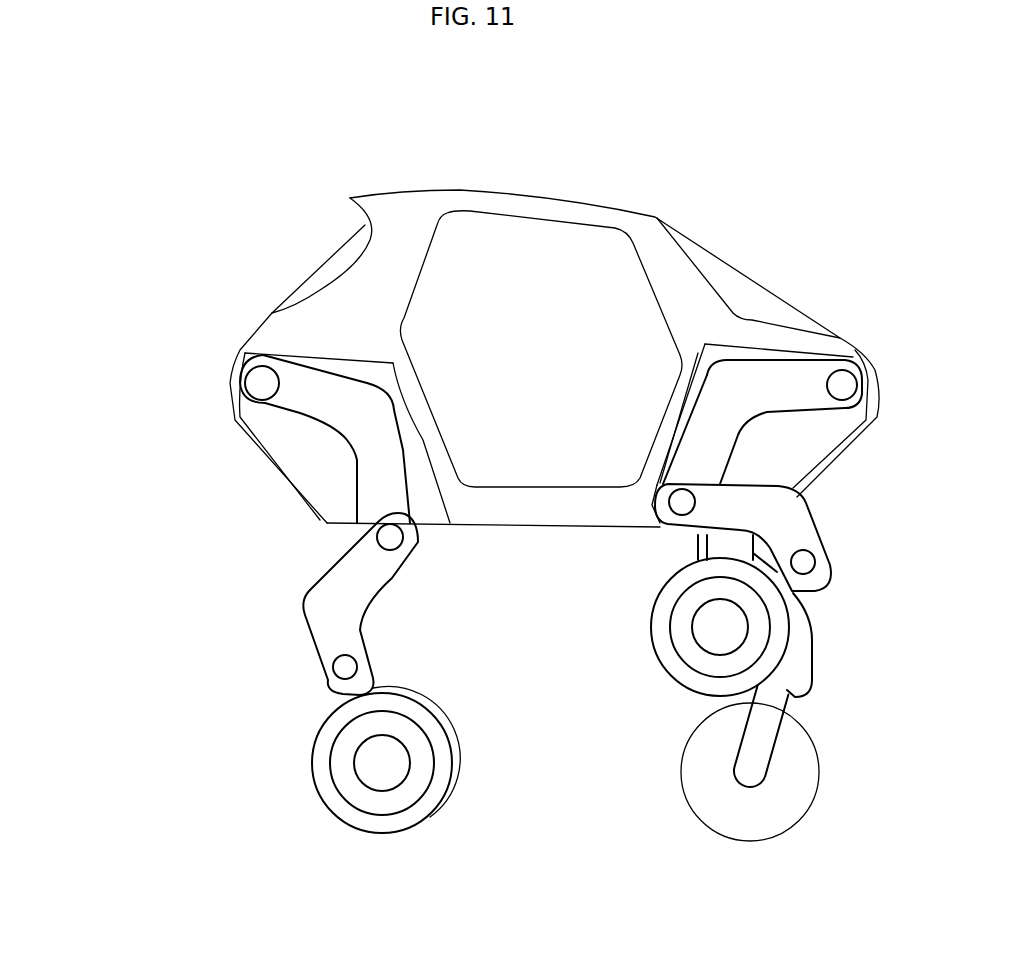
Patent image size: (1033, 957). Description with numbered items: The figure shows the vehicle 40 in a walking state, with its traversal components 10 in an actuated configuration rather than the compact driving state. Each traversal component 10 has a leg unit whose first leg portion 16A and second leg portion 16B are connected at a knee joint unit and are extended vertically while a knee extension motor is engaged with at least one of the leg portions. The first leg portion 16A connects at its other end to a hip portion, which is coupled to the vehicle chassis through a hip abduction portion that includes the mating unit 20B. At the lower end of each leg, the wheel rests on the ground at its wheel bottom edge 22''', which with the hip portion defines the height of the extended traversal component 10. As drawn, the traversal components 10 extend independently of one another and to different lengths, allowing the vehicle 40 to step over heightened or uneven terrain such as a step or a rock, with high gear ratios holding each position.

The vehicle 40 is at (112, 404).
The mating unit 20B is at (210, 360).
The vehicle traversal component 10 is at (207, 533).
The first leg portion 16A is at (362, 465).
The second leg portion 16B is at (367, 585).
The wheel bottom edge 22''' is at (565, 740).